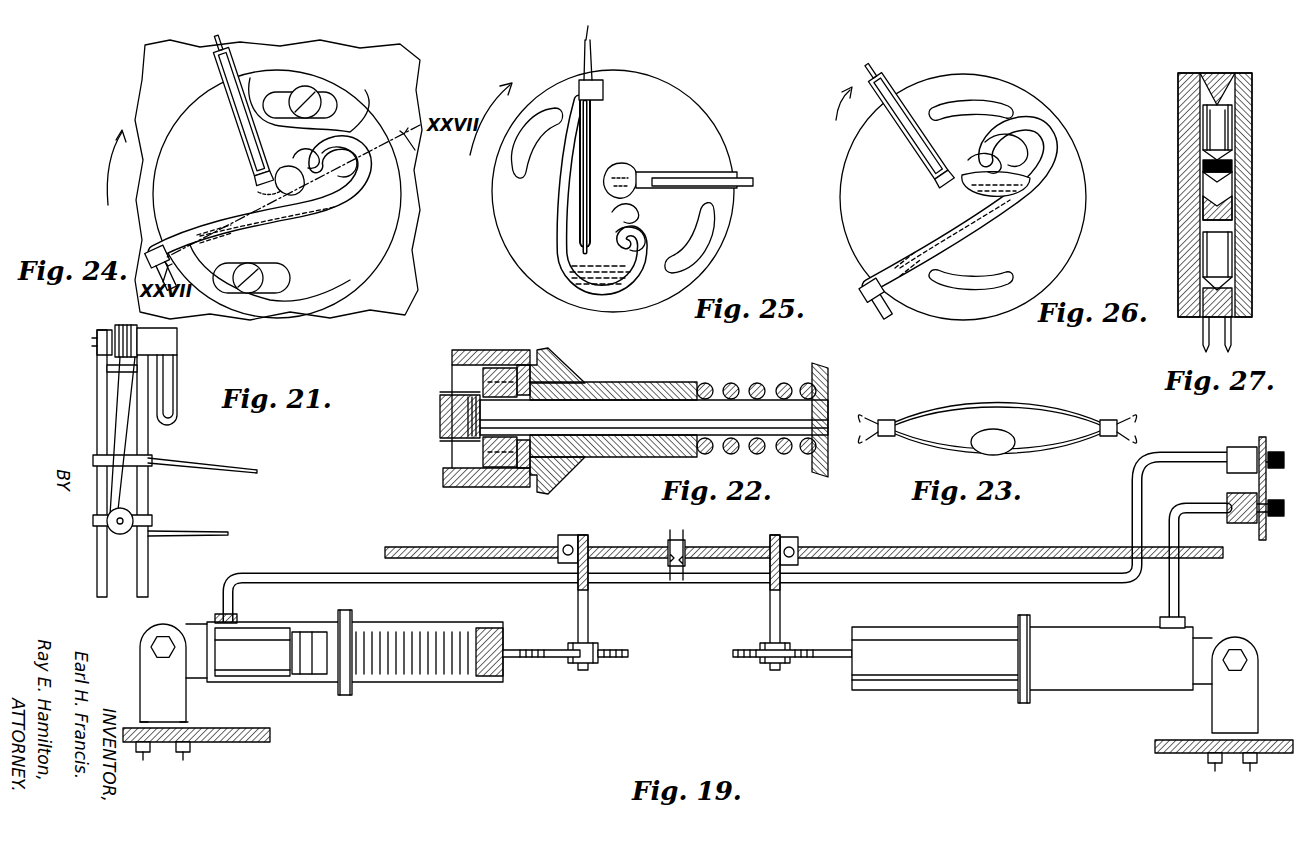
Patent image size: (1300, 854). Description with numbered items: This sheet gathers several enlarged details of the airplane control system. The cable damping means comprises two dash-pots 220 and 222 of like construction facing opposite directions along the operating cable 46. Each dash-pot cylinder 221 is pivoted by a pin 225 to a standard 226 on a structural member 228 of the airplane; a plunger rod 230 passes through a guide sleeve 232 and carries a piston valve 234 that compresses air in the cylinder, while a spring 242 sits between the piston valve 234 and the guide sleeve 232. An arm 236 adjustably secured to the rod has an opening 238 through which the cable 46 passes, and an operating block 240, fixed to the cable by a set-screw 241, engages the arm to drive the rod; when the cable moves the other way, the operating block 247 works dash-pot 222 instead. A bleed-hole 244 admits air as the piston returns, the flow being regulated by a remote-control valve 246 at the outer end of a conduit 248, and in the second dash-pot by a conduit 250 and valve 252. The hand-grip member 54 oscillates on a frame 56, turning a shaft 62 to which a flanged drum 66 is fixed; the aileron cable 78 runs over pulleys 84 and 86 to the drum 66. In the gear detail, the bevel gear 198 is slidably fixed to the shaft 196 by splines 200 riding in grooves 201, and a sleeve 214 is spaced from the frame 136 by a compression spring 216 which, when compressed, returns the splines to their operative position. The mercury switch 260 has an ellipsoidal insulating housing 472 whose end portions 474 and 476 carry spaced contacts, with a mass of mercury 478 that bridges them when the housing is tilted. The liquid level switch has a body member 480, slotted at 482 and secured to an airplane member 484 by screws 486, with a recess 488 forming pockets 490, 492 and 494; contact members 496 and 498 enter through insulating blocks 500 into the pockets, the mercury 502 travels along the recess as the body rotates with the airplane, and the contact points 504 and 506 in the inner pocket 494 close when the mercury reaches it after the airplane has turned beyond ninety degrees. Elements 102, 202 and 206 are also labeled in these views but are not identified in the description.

In FIG. 19, the cable 46 is at (718, 548).
In FIG. 21, the hand-grip member 54 is at (178, 360).
In FIG. 21, the frame 56 is at (97, 428).
In FIG. 21, the shaft 62 is at (95, 343).
In FIG. 21, the flanged drum 66 is at (118, 330).
In FIG. 21, the cable 78 is at (198, 530).
In FIG. 21, the pulley 84 is at (130, 513).
In FIG. 21, the pulley 86 is at (115, 375).
In FIG. 21, the arm 102 is at (205, 468).
In FIG. 22, the frame 136 is at (828, 380).
In FIG. 22, the shaft 196 is at (440, 422).
In FIG. 22, the bevel gear 198 is at (583, 382).
In FIG. 22, the splines 200 is at (498, 350).
In FIG. 22, the grooves 201 is at (440, 398).
In FIG. 22, the nut flange 202 is at (462, 488).
In FIG. 22, the cone collar 206 is at (545, 352).
In FIG. 22, the sleeve 214 is at (662, 382).
In FIG. 22, the compression spring 216 is at (757, 382).
In FIG. 19, the dash-pot 220 is at (355, 657).
In FIG. 19, the dash-pot cylinder 221 is at (681, 630).
In FIG. 19, the dash-pot 222 is at (1022, 662).
In FIG. 19, the pin 225 is at (160, 642).
In FIG. 19, the standard 226 is at (186, 700).
In FIG. 19, the structural member 228 is at (250, 744).
In FIG. 19, the plunger rod 230 is at (578, 660).
In FIG. 19, the guide sleeve 232 is at (530, 645).
In FIG. 19, the piston valve 234 is at (292, 656).
In FIG. 19, the arm 236 is at (588, 622).
In FIG. 19, the opening 238 is at (590, 545).
In FIG. 19, the operating block 240 is at (566, 536).
In FIG. 19, the set-screw 241 is at (560, 548).
In FIG. 19, the spring 242 is at (486, 626).
In FIG. 19, the bleed-hole 244 is at (245, 622).
In FIG. 19, the remote-control valve 246 is at (1245, 447).
In FIG. 19, the operating block 247 is at (800, 553).
In FIG. 19, the conduit 248 is at (370, 578).
In FIG. 19, the conduit 250 is at (1178, 600).
In FIG. 19, the valve 252 is at (1265, 534).
In FIG. 23, the mercury switch 260 is at (997, 415).
In FIG. 23, the ellipsoidal housing 472 is at (1058, 450).
In FIG. 23, the end portion 474 is at (893, 420).
In FIG. 23, the end portion 476 is at (1108, 420).
In FIG. 23, the mass of mercury 478 is at (1000, 440).
In FIG. 24, the body member 480 is at (368, 128).
In FIG. 25, the body member 480 is at (710, 144).
In FIG. 27, the body member 480 is at (1190, 73).
In FIG. 24, the slot 482 is at (338, 112).
In FIG. 25, the slot 482 is at (538, 162).
In FIG. 26, the slot 482 is at (963, 100).
In FIG. 24, the member 484 is at (268, 50).
In FIG. 24, the screws 486 is at (310, 95).
In FIG. 24, the recess 488 is at (346, 210).
In FIG. 25, the recess 488 is at (560, 204).
In FIG. 26, the recess 488 is at (950, 236).
In FIG. 24, the pocket 490 is at (208, 232).
In FIG. 26, the pocket 490 is at (905, 266).
In FIG. 24, the pocket 492 is at (350, 172).
In FIG. 25, the pocket 492 is at (646, 236).
In FIG. 26, the pocket 492 is at (985, 140).
In FIG. 24, the pocket 494 is at (296, 163).
In FIG. 25, the pocket 494 is at (638, 210).
In FIG. 26, the pocket 494 is at (975, 170).
In FIG. 24, the contact member 496 is at (307, 226).
In FIG. 25, the contact member 496 is at (600, 112).
In FIG. 26, the contact member 496 is at (985, 232).
In FIG. 27, the contact member 496 is at (1200, 104).
In FIG. 27, the contact member 498 is at (1252, 102).
In FIG. 24, the insulating blocks 500 is at (182, 243).
In FIG. 25, the insulating blocks 500 is at (603, 90).
In FIG. 26, the insulating blocks 500 is at (878, 302).
In FIG. 24, the liquid conductor 502 is at (260, 184).
In FIG. 25, the liquid conductor 502 is at (602, 286).
In FIG. 26, the liquid conductor 502 is at (1030, 180).
In FIG. 24, the contact point 504 is at (312, 192).
In FIG. 25, the contact point 504 is at (624, 172).
In FIG. 27, the contact point 504 is at (1200, 192).
In FIG. 27, the contact point 506 is at (1235, 192).